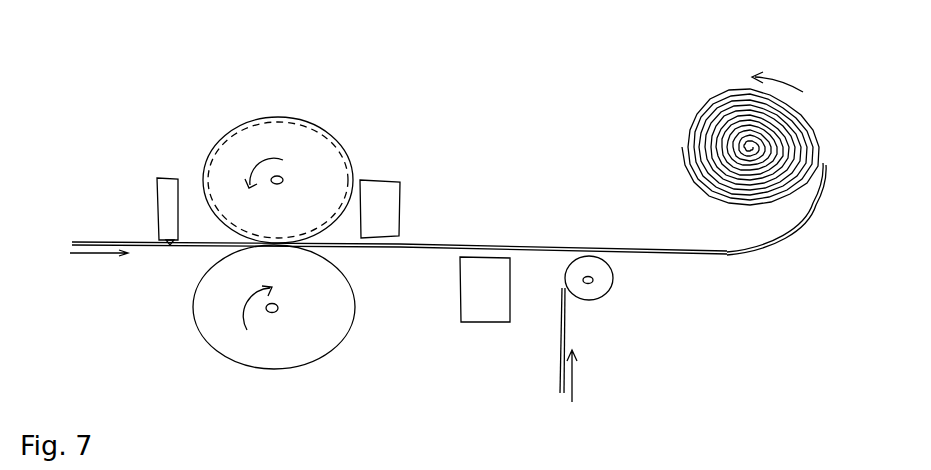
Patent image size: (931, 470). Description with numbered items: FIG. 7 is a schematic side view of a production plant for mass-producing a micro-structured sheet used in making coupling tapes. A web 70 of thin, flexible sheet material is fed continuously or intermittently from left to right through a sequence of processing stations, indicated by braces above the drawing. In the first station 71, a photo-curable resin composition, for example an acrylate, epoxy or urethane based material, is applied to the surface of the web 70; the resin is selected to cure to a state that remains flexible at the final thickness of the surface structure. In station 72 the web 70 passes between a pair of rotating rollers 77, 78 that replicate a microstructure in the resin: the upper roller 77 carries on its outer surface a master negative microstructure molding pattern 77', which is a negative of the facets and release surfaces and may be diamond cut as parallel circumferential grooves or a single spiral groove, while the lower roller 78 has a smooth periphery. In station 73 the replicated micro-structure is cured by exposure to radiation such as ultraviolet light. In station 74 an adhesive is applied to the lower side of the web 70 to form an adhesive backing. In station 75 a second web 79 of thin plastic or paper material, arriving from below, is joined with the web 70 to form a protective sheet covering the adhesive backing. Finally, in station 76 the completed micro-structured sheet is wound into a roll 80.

The web 70 is at (110, 242).
The station 71 is at (187, 75).
The station 72 is at (357, 75).
The station 73 is at (407, 75).
The station 74 is at (515, 75).
The station 75 is at (607, 75).
The station 76 is at (833, 75).
The roller 77 is at (311, 180).
The molding pattern 77' is at (324, 180).
The roller 78 is at (320, 337).
The web 79 is at (558, 337).
The roll 80 is at (680, 160).